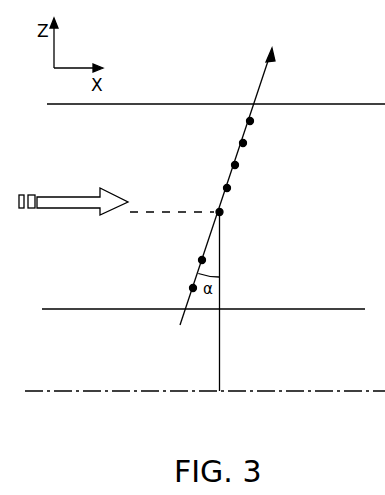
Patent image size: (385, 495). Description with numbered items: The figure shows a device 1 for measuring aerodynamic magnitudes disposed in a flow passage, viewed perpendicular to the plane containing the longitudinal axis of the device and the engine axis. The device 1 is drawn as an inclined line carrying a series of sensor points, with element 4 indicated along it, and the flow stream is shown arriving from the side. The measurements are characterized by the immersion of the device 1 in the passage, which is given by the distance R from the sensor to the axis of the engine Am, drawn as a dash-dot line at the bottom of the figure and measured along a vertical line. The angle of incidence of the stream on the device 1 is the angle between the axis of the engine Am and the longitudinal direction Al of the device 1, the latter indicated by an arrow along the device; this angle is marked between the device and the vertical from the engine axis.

The device 1 is at (248, 132).
The array axis 4 is at (246, 186).
The distance R is at (227, 301).
The longitudinal direction Al is at (280, 58).
The axis of the engine Am is at (205, 404).